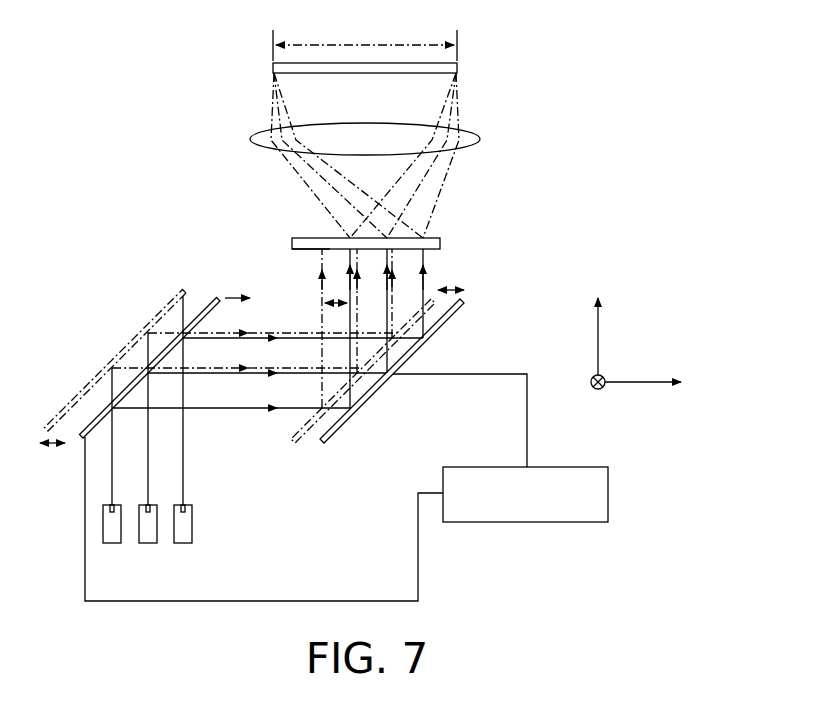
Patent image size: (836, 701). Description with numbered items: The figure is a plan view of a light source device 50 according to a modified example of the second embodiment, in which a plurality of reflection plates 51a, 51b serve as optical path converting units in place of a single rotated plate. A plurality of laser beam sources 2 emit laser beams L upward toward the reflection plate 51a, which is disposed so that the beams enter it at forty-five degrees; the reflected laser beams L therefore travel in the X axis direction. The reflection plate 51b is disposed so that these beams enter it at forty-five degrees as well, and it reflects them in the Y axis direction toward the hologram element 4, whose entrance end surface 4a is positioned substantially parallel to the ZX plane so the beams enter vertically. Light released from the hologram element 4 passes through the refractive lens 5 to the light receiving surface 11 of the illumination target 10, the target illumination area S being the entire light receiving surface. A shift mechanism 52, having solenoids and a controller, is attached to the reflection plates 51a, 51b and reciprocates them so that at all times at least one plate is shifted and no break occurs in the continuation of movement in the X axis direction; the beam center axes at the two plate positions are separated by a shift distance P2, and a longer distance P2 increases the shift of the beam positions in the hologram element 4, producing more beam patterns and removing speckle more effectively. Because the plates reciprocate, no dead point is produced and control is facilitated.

The light source device 50 is at (165, 128).
The illumination target 10 is at (457, 69).
The light receiving surface 11 is at (277, 88).
The refractive lens 5 is at (482, 139).
The hologram element 4 is at (440, 240).
The entrance end surface 4a is at (293, 250).
The reflection plate 51a is at (217, 297).
The reflection plate 51b is at (465, 302).
The shift mechanism 52 is at (609, 494).
The laser beam sources 2 is at (113, 543).
The laser beams L is at (113, 488).
The shift distance P2 is at (336, 304).
The target illumination area S is at (365, 41).